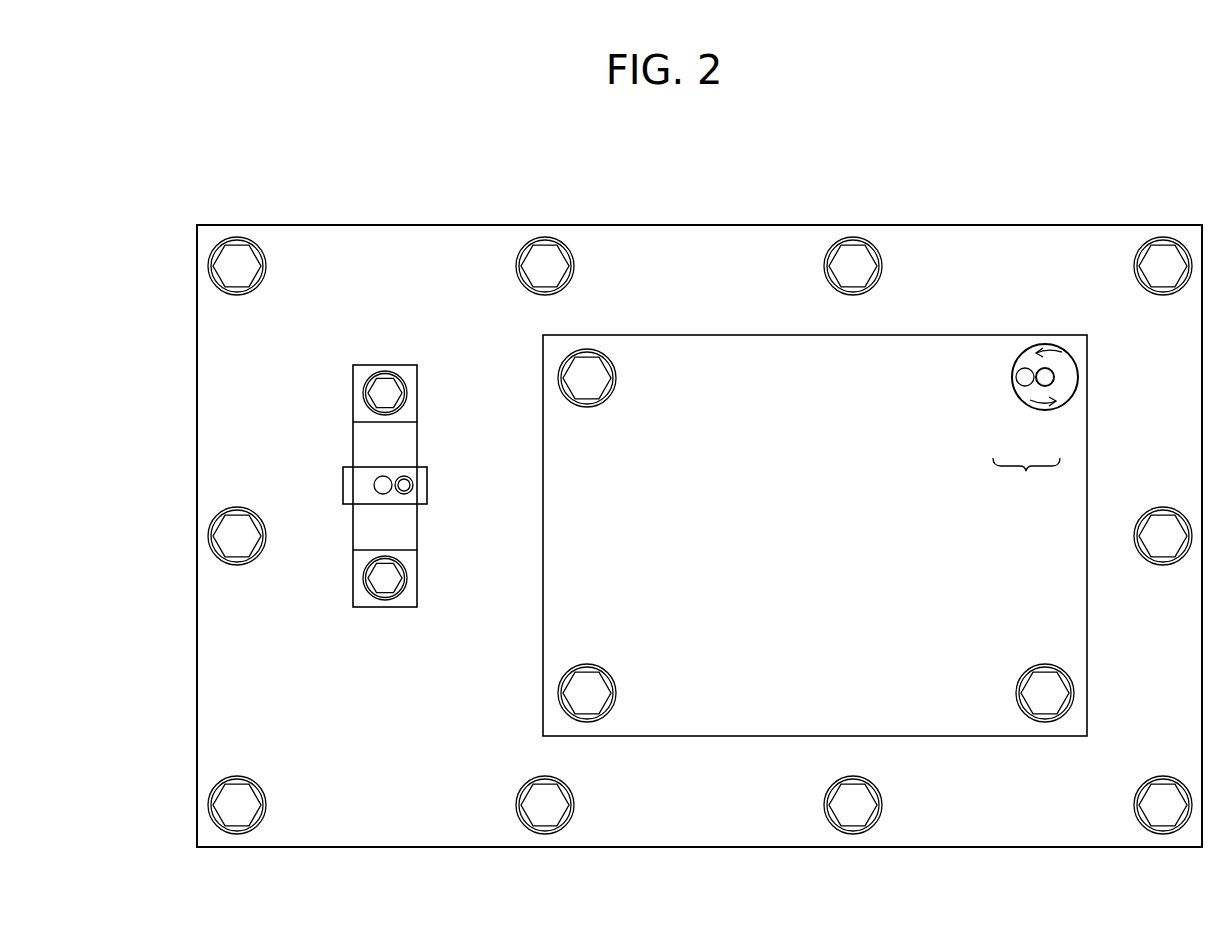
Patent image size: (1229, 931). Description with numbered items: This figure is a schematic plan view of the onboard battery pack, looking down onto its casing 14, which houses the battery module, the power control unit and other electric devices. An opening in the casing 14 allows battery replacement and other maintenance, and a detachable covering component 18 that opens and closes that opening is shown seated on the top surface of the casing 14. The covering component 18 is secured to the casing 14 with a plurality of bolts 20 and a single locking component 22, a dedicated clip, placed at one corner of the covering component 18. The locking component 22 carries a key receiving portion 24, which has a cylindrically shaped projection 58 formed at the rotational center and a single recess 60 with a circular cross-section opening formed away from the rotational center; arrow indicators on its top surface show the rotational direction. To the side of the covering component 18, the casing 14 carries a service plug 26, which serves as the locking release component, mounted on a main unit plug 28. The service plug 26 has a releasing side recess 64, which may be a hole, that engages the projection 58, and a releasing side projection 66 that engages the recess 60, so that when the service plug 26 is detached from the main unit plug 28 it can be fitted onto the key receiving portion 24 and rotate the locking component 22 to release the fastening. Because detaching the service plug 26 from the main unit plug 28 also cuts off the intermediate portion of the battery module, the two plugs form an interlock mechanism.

The casing 14 is at (731, 224).
The covering component 18 is at (935, 334).
The bolts 20 is at (589, 389).
The locking component 22 is at (1068, 417).
The key receiving portion 24 is at (1026, 478).
The service plug 26 is at (352, 445).
The main unit plug 28 is at (386, 454).
The projection 58 is at (1045, 386).
The recess 60 is at (1024, 385).
The releasing side recess 64 is at (374, 485).
The releasing side projection 66 is at (413, 488).